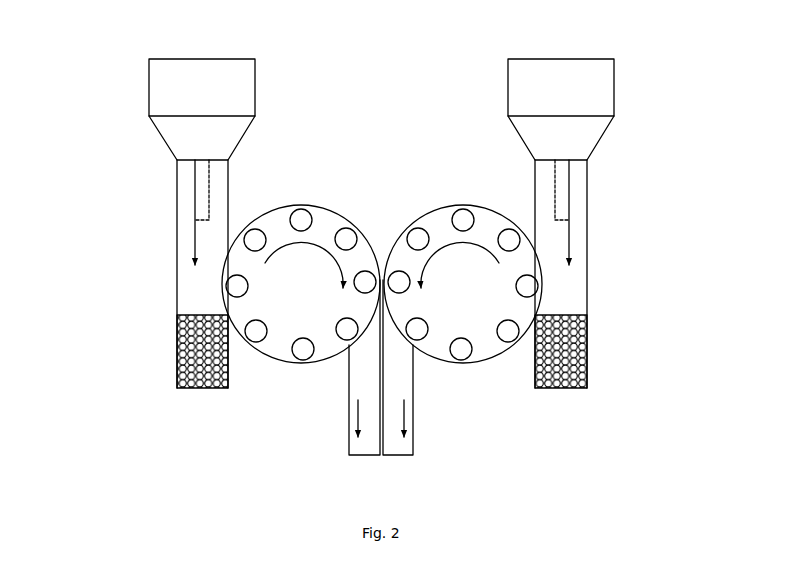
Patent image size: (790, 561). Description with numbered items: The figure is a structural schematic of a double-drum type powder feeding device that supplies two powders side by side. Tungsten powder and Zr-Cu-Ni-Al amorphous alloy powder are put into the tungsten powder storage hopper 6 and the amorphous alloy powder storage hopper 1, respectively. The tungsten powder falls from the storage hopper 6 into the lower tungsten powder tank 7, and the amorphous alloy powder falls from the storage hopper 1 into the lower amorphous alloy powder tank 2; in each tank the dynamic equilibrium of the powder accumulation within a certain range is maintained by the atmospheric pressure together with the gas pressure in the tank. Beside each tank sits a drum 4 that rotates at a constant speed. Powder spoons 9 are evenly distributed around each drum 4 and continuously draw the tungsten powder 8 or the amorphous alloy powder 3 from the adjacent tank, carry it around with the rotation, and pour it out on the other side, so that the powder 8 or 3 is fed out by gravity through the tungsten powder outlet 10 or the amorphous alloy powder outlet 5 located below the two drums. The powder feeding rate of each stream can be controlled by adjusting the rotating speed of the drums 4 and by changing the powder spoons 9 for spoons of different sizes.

The amorphous alloy powder storage hopper 1 is at (592, 84).
The amorphous alloy powder tank 2 is at (560, 283).
The amorphous alloy powder 3 is at (588, 325).
The drum 4 is at (300, 283).
The amorphous alloy powder outlet 5 is at (393, 447).
The tungsten powder storage hopper 6 is at (172, 84).
The tungsten powder tank 7 is at (202, 285).
The tungsten powder 8 is at (200, 352).
The powder spoon 9 is at (412, 328).
The tungsten powder outlet 10 is at (370, 447).